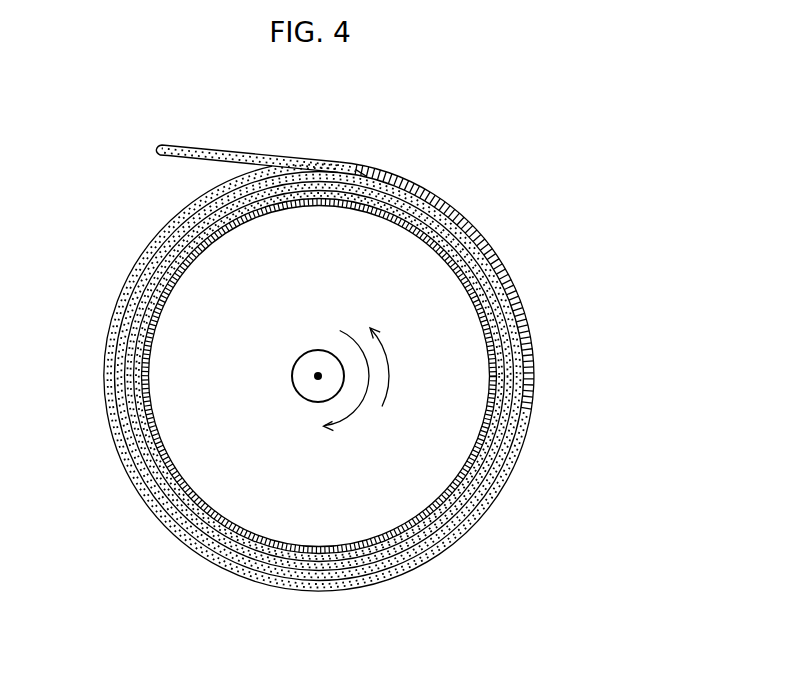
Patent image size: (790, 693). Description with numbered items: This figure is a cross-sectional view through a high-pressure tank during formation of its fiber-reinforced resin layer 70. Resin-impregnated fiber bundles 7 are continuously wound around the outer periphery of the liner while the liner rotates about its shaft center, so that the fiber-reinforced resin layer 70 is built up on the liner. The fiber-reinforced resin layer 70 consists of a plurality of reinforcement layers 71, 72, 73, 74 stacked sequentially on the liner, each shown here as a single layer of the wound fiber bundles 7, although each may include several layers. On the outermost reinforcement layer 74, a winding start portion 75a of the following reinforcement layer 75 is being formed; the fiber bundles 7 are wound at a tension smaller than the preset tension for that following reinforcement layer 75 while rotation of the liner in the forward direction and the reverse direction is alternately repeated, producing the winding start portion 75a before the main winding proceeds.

The fiber bundles 7 is at (220, 144).
The fiber-reinforced resin layer 70 is at (329, 393).
The reinforcement layer 71 is at (338, 588).
The reinforcement layer 72 is at (416, 565).
The reinforcement layer 73 is at (476, 520).
The reinforcement layer 74 is at (510, 468).
The reinforcement layer 75 is at (348, 376).
The winding start portion 75a is at (517, 292).